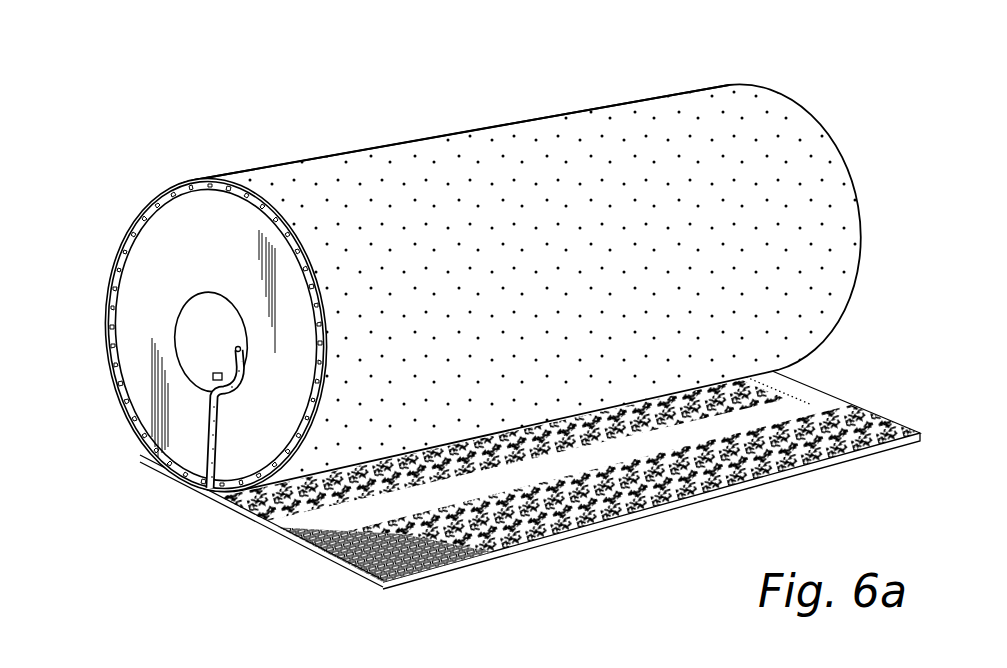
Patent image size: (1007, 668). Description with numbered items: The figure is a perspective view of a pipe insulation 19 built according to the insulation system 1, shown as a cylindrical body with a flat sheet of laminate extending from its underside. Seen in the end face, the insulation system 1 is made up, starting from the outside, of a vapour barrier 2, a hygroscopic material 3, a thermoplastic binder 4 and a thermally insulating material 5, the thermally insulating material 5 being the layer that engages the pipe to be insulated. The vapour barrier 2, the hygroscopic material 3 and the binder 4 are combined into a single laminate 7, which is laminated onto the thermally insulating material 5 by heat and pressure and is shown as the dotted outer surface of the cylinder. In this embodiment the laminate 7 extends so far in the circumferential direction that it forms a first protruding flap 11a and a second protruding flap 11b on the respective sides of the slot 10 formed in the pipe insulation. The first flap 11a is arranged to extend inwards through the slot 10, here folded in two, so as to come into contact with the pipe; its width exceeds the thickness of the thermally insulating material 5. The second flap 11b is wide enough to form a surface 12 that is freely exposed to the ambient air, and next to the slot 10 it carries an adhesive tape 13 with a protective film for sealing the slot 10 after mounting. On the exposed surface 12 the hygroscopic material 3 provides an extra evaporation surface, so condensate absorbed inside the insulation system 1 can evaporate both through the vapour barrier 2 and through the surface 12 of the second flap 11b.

The insulation system 1 is at (490, 261).
The vapour barrier 2 is at (118, 406).
The hygroscopic material 3 is at (108, 347).
The thermoplastic binder 4 is at (106, 283).
The thermally insulating material 5 is at (164, 228).
The laminate 7 is at (640, 125).
The slot 10 is at (205, 437).
The first protruding flap 11a is at (216, 424).
The second protruding flap 11b is at (347, 569).
The surface 12 is at (483, 557).
The adhesive tape 13 is at (297, 523).
The insulation 19 is at (468, 126).